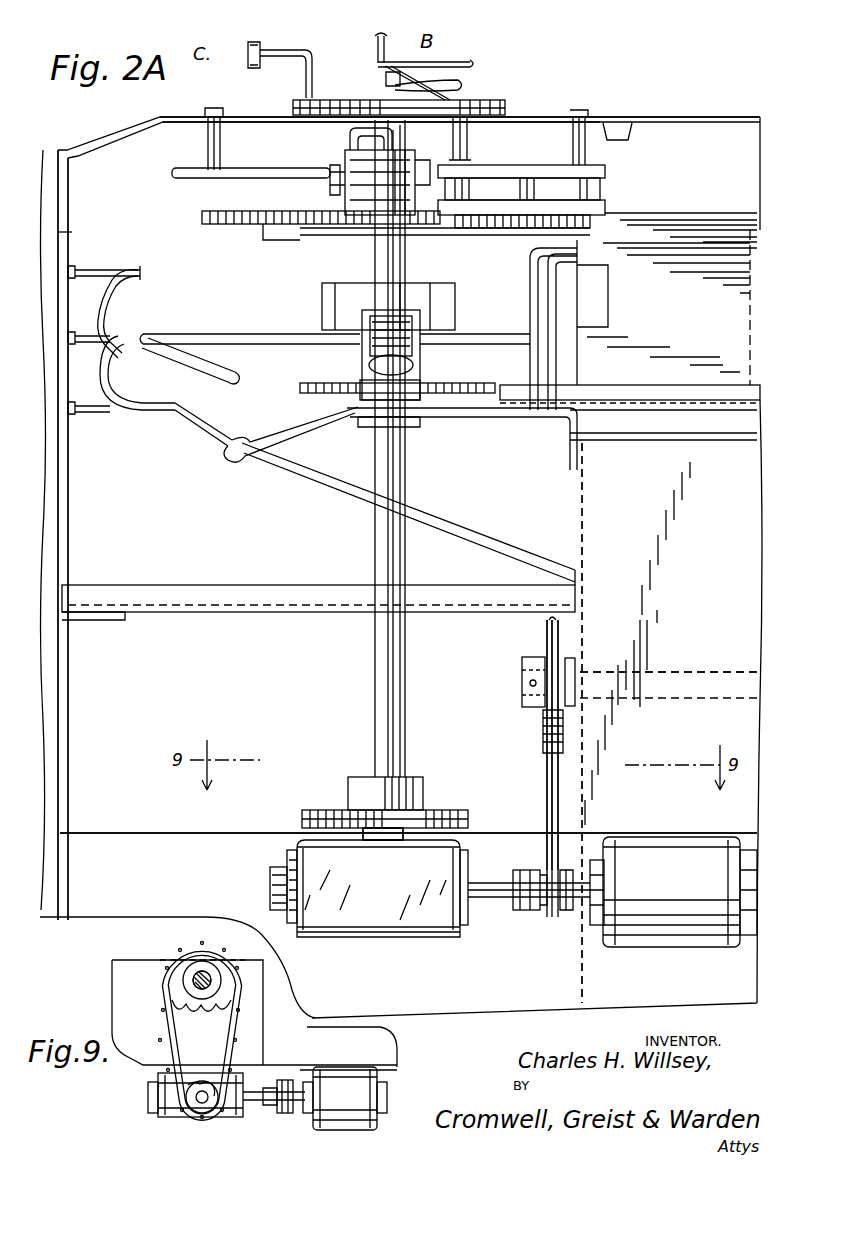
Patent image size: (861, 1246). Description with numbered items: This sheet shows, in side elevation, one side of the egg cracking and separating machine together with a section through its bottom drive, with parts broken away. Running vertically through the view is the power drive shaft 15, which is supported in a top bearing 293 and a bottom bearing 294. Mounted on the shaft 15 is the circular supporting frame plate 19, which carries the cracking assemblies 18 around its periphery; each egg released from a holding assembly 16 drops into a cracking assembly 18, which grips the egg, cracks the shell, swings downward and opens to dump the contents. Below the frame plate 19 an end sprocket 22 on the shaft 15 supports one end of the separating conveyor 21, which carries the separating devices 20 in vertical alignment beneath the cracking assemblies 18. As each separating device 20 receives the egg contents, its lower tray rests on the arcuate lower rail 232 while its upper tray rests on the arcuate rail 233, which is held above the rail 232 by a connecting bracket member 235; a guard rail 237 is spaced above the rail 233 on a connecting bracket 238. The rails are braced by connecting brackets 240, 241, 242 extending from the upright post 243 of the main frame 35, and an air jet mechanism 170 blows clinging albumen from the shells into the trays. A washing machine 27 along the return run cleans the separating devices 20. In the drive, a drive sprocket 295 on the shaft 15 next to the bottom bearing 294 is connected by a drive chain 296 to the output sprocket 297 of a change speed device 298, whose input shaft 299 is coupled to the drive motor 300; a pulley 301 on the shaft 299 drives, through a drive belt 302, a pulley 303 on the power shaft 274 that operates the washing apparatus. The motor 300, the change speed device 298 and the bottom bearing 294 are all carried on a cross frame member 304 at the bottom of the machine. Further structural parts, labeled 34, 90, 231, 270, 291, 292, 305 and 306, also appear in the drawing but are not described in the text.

In FIG. 2A, the vertical power shaft 15 is at (395, 650).
In FIG. 9, the vertical power shaft 15 is at (212, 980).
In FIG. 2A, the holding assembly 16 is at (474, 72).
In FIG. 2A, the cracking assembly 18 is at (332, 152).
In FIG. 2A, the supporting frame plate 19 is at (286, 230).
In FIG. 2A, the separating device 20 is at (441, 362).
In FIG. 2A, the separating conveyor 21 is at (608, 385).
In FIG. 2A, the end sprocket 22 is at (312, 383).
In FIG. 2A, the washing machine 27 is at (568, 517).
In FIG. 2A, the top frame rail 34 is at (686, 122).
In FIG. 2A, the main frame 35 is at (52, 522).
In FIG. 2A, the gear 90 is at (272, 211).
In FIG. 2A, the air jet mechanism 170 is at (336, 300).
In FIG. 2A, the plate 231 is at (660, 385).
In FIG. 2A, the arcuate lower rail 232 is at (196, 428).
In FIG. 2A, the arcuate rail 233 is at (218, 333).
In FIG. 2A, the connecting bracket member 235 is at (108, 395).
In FIG. 2A, the guard rail 237 is at (172, 276).
In FIG. 2A, the connecting bracket 238 is at (108, 311).
In FIG. 2A, the connecting bracket 240 is at (88, 414).
In FIG. 2A, the connecting bracket 241 is at (92, 344).
In FIG. 2A, the connecting bracket 242 is at (90, 268).
In FIG. 2A, the upright post 243 is at (58, 232).
In FIG. 2A, the link 270 is at (575, 548).
In FIG. 2A, the power shaft 274 is at (693, 682).
In FIG. 2A, the connecting rod 291 is at (464, 526).
In FIG. 2A, the bar 292 is at (457, 418).
In FIG. 2A, the top bearing 293 is at (400, 130).
In FIG. 2A, the bottom bearing 294 is at (426, 796).
In FIG. 2A, the drive sprocket 295 is at (316, 812).
In FIG. 9, the drive sprocket 295 is at (180, 980).
In FIG. 2A, the drive chain 296 is at (303, 817).
In FIG. 9, the drive chain 296 is at (168, 1023).
In FIG. 2A, the output sprocket 297 is at (350, 826).
In FIG. 9, the output sprocket 297 is at (202, 1113).
In FIG. 2A, the change speed device 298 is at (398, 937).
In FIG. 9, the change speed device 298 is at (165, 1105).
In FIG. 2A, the input shaft 299 is at (493, 898).
In FIG. 9, the input shaft 299 is at (258, 1090).
In FIG. 2A, the drive motor 300 is at (668, 948).
In FIG. 9, the drive motor 300 is at (350, 1078).
In FIG. 2A, the pulley 301 is at (538, 912).
In FIG. 9, the pulley 301 is at (278, 1114).
In FIG. 2A, the drive belt 302 is at (556, 786).
In FIG. 2A, the pulley 303 is at (545, 638).
In FIG. 2A, the cross frame member 304 is at (143, 834).
In FIG. 9, the cross frame member 304 is at (384, 1045).
In FIG. 2A, the shelf 305 is at (182, 590).
In FIG. 2A, the bracket 306 is at (103, 617).